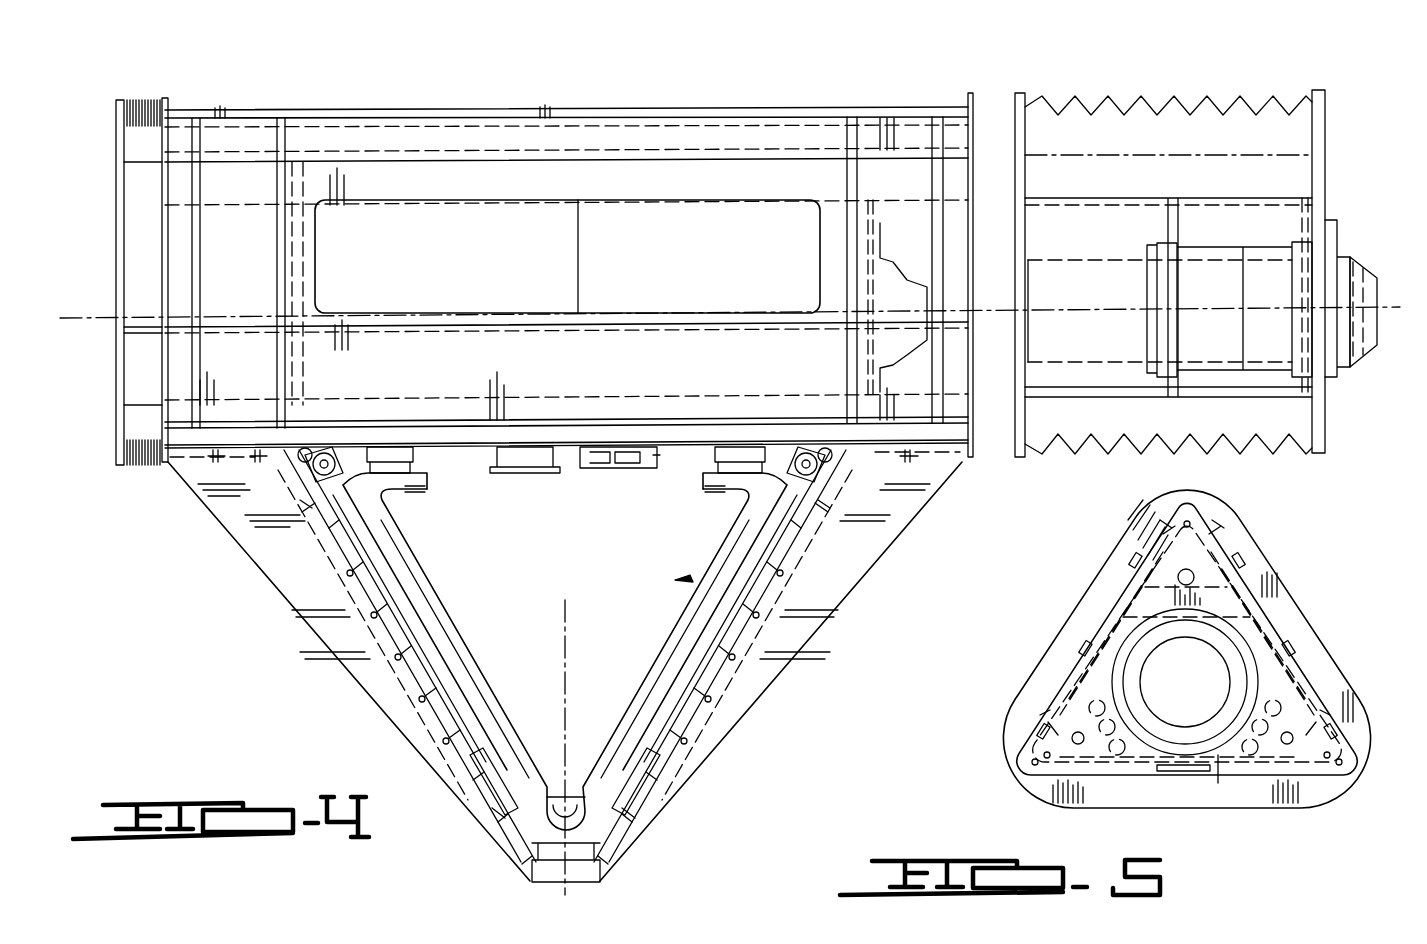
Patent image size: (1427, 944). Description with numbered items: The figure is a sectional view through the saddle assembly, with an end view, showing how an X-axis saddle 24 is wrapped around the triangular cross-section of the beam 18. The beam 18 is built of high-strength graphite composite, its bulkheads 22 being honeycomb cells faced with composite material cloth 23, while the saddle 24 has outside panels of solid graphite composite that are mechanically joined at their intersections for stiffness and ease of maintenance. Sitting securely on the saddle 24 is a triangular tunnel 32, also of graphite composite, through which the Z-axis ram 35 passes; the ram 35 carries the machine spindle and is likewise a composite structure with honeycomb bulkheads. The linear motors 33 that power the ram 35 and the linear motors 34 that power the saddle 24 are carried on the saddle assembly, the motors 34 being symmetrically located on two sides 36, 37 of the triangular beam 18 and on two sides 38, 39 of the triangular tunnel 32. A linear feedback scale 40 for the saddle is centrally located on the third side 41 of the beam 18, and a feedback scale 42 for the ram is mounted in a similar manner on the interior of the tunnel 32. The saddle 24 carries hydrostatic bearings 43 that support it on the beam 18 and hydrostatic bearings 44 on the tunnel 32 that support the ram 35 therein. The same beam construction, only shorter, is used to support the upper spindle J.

In FIG. 4, the beam 18 is at (692, 582).
In FIG. 4, the bulkheads 22 is at (428, 598).
In FIG. 4, the composite material cloth 23 is at (428, 468).
In FIG. 4, the X-axis saddle 24 is at (652, 440).
In FIG. 4, the tunnel 32 is at (738, 108).
In FIG. 5, the tunnel 32 is at (1224, 560).
In FIG. 5, the linear motors 33 is at (1142, 580).
In FIG. 4, the linear motors 34 is at (410, 637).
In FIG. 4, the ram 35 is at (1153, 398).
In FIG. 4, the side of the triangular beam 36 is at (717, 760).
In FIG. 4, the side of the triangular beam 37 is at (465, 757).
In FIG. 5, the side of the triangular tunnel 38 is at (1273, 637).
In FIG. 5, the side of the triangular tunnel 39 is at (1087, 627).
In FIG. 4, the linear feedback scale 40 is at (517, 455).
In FIG. 4, the third side of the beam 41 is at (468, 463).
In FIG. 5, the feedback scale 42 is at (1173, 780).
In FIG. 4, the hydrostatic bearings 43 is at (333, 517).
In FIG. 5, the hydrostatic bearings 44 is at (1165, 518).
In FIG. 4, the upper spindle J is at (1353, 260).